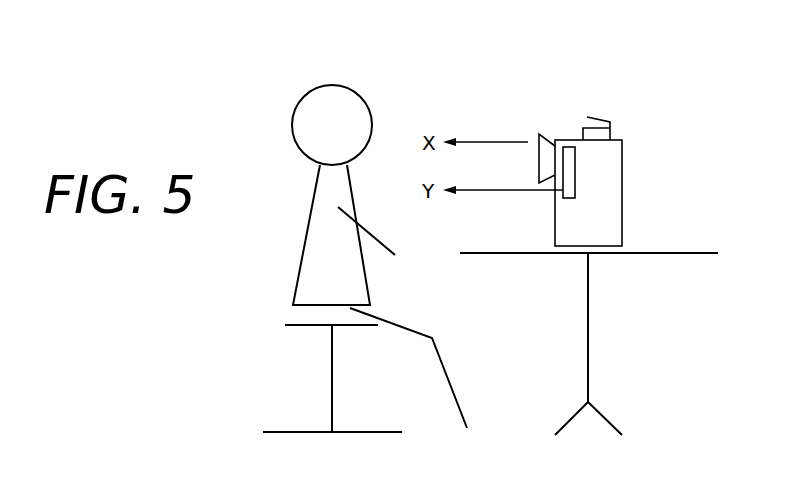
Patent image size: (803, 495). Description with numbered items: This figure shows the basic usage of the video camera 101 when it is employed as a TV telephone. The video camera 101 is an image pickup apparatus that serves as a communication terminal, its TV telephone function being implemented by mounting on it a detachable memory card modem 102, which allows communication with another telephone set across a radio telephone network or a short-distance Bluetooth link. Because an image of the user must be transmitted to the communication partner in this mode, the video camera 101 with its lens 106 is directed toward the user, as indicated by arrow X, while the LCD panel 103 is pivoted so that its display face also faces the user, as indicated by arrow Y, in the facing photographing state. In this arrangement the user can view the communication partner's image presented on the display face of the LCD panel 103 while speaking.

The video camera 101 is at (657, 210).
The memory card modem 102 is at (600, 115).
The LCD panel 103 is at (575, 160).
The lens 106 is at (546, 130).